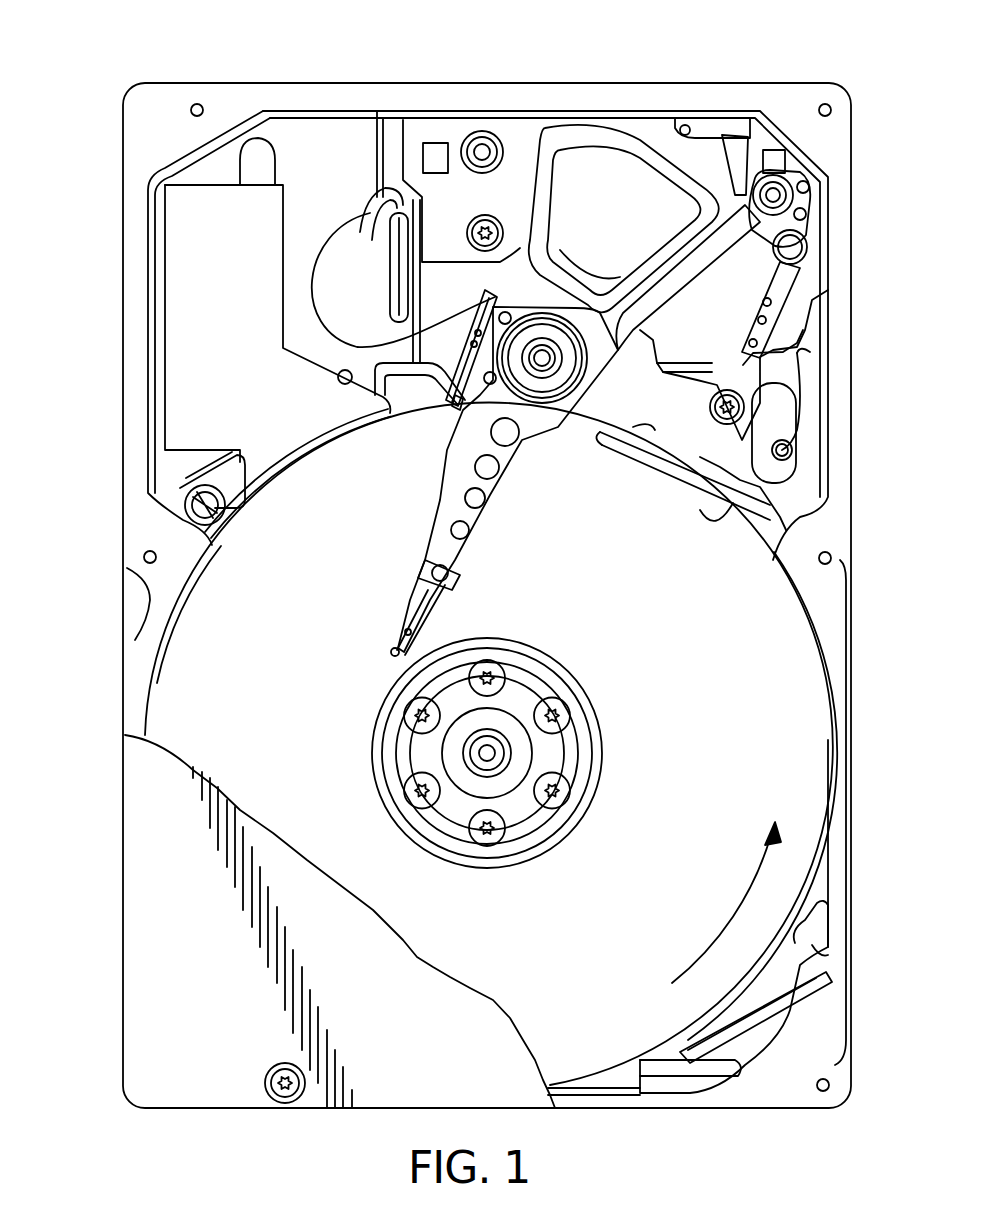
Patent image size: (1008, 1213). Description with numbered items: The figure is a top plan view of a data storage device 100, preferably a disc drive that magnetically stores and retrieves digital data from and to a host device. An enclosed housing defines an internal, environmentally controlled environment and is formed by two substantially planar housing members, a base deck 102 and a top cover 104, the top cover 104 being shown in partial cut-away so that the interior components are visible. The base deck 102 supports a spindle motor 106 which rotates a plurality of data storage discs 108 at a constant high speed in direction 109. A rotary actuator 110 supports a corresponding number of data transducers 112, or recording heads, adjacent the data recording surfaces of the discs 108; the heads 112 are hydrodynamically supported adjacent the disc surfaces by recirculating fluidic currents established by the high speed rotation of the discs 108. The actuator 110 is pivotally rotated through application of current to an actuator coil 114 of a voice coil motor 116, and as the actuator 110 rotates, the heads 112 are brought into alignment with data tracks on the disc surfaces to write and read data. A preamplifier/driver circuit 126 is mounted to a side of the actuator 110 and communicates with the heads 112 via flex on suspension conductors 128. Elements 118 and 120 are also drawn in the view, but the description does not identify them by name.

The data storage device 100 is at (487, 595).
The base deck 102 is at (308, 350).
The top cover 104 is at (152, 797).
The spindle motor 106 is at (510, 725).
The data storage discs 108 is at (768, 748).
The direction 109 is at (718, 915).
The rotary actuator 110 is at (550, 412).
The data transducers 112 is at (385, 657).
The actuator coil 114 is at (658, 128).
The voice coil motor 116 is at (605, 135).
The latch 118 is at (680, 335).
The load/unload ramp 120 is at (727, 453).
The preamplifier/driver circuit 126 is at (450, 360).
The flex on suspension conductors 128 is at (438, 510).